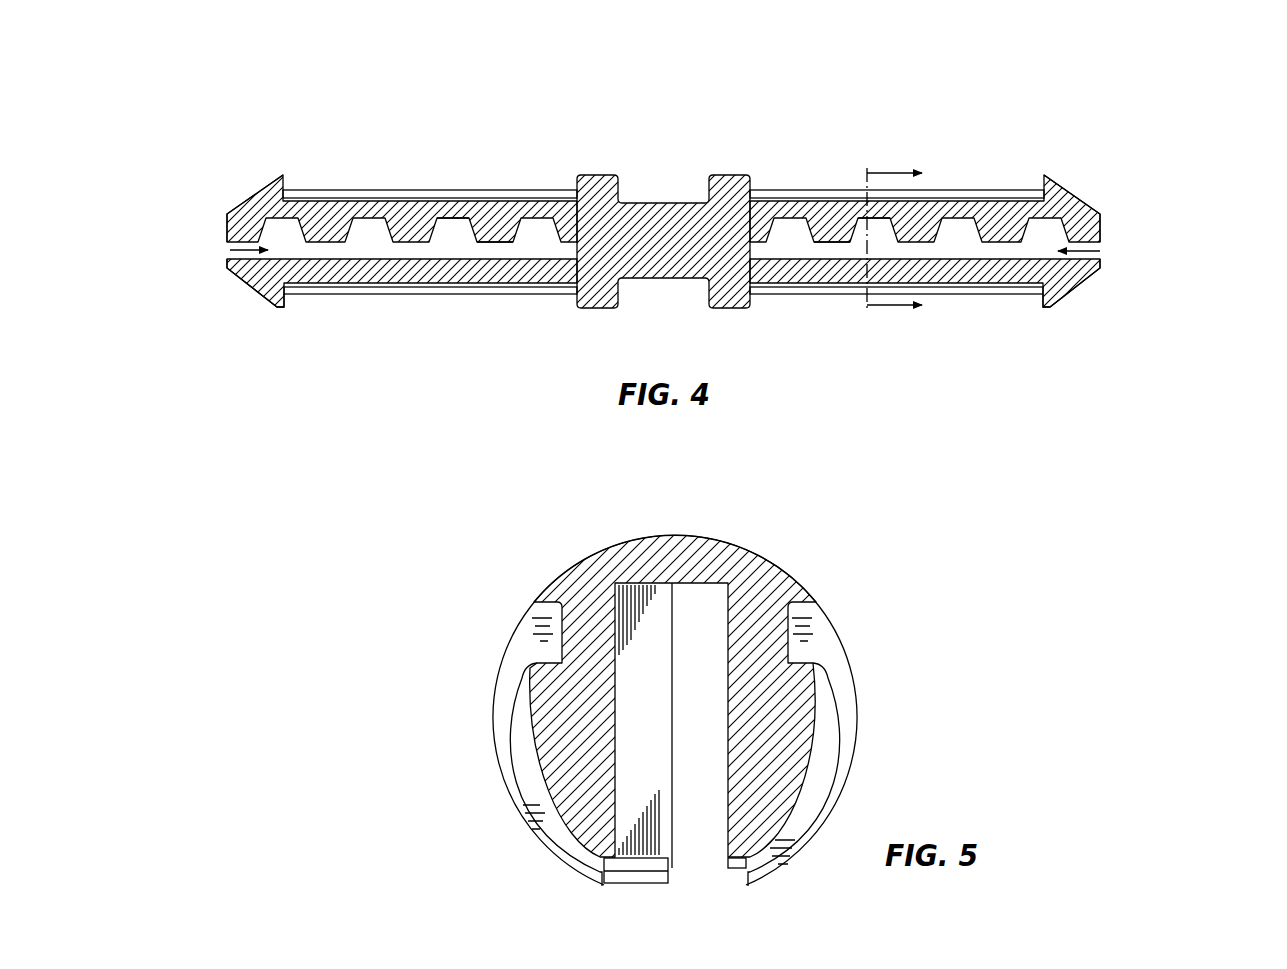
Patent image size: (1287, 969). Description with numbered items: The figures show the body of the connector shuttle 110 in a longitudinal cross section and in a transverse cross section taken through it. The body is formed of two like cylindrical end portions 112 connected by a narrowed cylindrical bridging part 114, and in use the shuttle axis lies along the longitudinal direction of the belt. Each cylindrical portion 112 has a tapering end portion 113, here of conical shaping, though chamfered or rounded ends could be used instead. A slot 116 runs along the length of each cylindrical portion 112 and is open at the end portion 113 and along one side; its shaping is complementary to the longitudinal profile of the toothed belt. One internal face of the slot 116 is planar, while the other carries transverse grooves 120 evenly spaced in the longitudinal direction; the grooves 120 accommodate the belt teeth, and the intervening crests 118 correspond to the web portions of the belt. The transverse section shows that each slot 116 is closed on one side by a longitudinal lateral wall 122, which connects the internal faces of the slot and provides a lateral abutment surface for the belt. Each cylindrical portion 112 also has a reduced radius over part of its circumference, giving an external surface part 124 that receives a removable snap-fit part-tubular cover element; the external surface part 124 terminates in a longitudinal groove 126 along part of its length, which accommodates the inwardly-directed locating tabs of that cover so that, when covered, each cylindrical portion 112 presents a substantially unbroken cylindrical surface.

In FIG. 4, the connector shuttle 110 is at (1136, 176).
In FIG. 5, the connector shuttle 110 is at (457, 582).
In FIG. 4, the cylindrical end portion 112 is at (412, 271).
In FIG. 4, the tapering end portion 113 is at (252, 289).
In FIG. 4, the bridging part 114 is at (664, 233).
In FIG. 4, the slot 116 is at (230, 251).
In FIG. 5, the slot 116 is at (706, 718).
In FIG. 4, the crest 118 is at (495, 240).
In FIG. 5, the crest 118 is at (673, 806).
In FIG. 4, the transverse groove 120 is at (455, 217).
In FIG. 5, the longitudinal lateral wall 122 is at (703, 580).
In FIG. 4, the external surface part 124 is at (467, 290).
In FIG. 5, the external surface part 124 is at (817, 745).
In FIG. 5, the longitudinal groove 126 is at (793, 637).